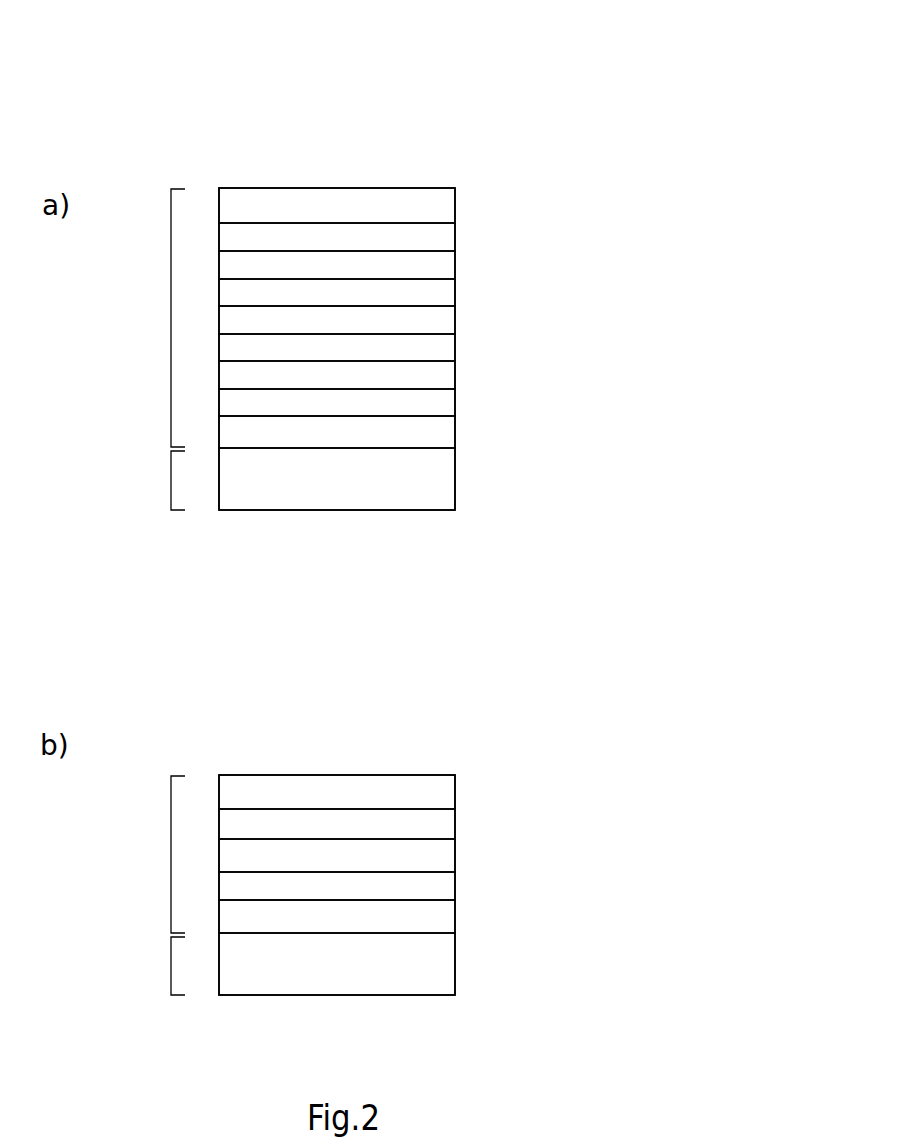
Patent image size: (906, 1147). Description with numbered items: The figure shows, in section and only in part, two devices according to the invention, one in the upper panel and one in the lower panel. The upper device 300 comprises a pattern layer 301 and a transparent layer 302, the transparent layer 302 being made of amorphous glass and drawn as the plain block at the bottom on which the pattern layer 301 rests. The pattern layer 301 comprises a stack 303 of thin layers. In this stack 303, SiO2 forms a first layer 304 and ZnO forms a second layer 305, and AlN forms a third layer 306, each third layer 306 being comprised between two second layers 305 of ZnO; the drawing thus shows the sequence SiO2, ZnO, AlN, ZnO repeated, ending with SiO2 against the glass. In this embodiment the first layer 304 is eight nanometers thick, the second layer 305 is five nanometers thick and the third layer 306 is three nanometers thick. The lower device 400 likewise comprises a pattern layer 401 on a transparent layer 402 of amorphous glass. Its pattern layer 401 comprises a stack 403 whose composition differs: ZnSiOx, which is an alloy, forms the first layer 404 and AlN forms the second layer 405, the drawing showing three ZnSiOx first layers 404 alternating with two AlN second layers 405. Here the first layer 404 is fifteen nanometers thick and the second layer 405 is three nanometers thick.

The device 300 is at (200, 125).
The pattern layer 301 is at (170, 312).
The transparent layer 302 is at (170, 478).
The stack 303 is at (397, 231).
The first layer 304 is at (455, 189).
The second layer 305 is at (455, 237).
The third layer 306 is at (455, 265).
The device 400 is at (215, 727).
The pattern layer 401 is at (170, 858).
The transparent layer 402 is at (170, 963).
The stack 403 is at (397, 769).
The first layer 404 is at (455, 776).
The second layer 405 is at (455, 824).